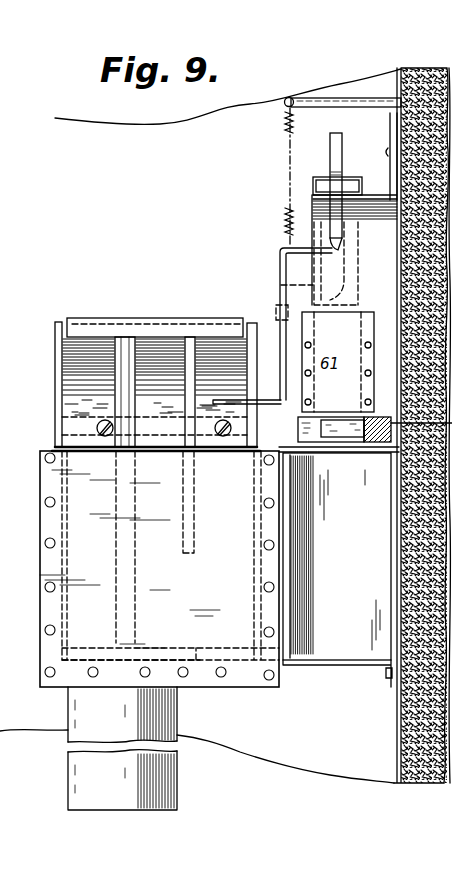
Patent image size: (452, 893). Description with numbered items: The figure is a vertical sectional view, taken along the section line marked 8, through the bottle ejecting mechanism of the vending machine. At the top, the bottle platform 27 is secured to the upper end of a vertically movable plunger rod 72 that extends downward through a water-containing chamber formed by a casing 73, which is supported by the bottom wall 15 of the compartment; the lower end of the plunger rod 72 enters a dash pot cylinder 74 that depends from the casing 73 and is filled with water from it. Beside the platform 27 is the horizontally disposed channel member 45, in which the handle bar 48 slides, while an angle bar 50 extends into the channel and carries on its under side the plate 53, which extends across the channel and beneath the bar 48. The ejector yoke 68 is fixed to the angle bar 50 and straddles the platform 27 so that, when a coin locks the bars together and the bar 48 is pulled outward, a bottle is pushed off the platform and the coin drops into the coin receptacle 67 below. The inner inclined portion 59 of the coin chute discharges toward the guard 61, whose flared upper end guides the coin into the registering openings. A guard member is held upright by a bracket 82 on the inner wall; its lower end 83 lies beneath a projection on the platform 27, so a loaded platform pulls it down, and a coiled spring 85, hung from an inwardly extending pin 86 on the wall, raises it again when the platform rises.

The section line 8- 8 is at (82, 443).
The bottom wall 15 is at (196, 660).
The platform 27 is at (153, 318).
The channel member 45 is at (322, 460).
The bar 48 is at (350, 438).
The angle bar 50 is at (165, 428).
The plate 53 is at (331, 420).
The inner inclined portion 59 is at (318, 188).
The guard 61 is at (340, 152).
The coin receptacle 67 is at (348, 638).
The ejector yoke 68 is at (55, 380).
The plunger rod 72 is at (125, 385).
The casing 73 is at (219, 567).
The dash pot cylinder 74 is at (165, 797).
The bracket 82 is at (277, 307).
The lower end 83 is at (228, 400).
The coiled spring 85 is at (285, 150).
The pin 86 is at (350, 100).